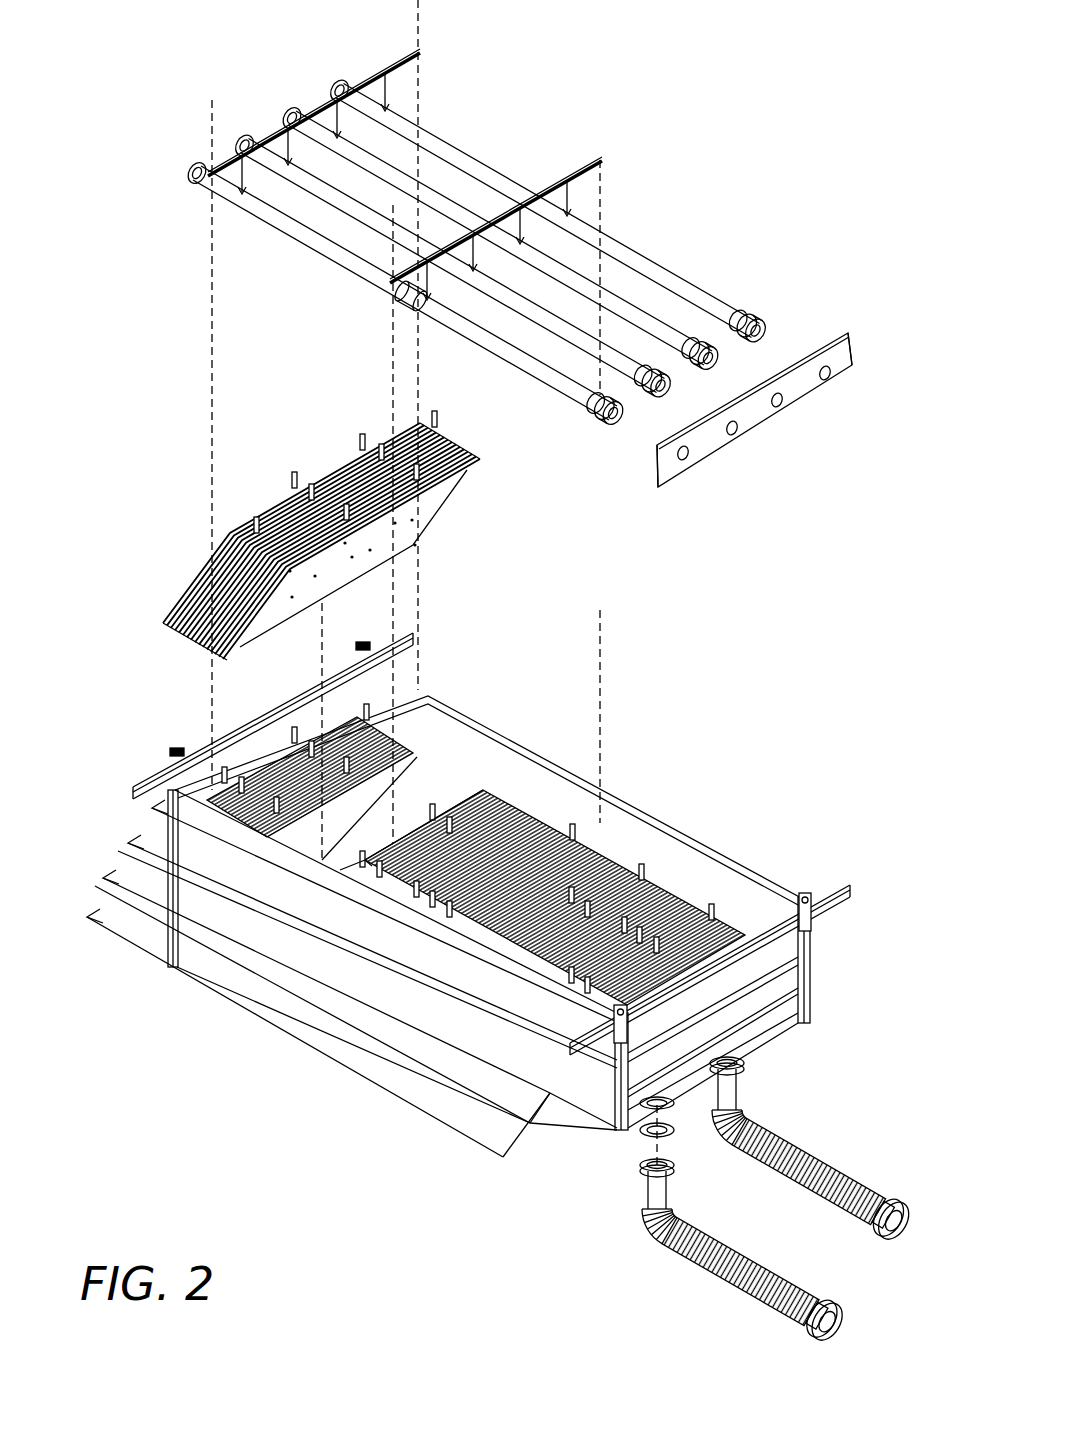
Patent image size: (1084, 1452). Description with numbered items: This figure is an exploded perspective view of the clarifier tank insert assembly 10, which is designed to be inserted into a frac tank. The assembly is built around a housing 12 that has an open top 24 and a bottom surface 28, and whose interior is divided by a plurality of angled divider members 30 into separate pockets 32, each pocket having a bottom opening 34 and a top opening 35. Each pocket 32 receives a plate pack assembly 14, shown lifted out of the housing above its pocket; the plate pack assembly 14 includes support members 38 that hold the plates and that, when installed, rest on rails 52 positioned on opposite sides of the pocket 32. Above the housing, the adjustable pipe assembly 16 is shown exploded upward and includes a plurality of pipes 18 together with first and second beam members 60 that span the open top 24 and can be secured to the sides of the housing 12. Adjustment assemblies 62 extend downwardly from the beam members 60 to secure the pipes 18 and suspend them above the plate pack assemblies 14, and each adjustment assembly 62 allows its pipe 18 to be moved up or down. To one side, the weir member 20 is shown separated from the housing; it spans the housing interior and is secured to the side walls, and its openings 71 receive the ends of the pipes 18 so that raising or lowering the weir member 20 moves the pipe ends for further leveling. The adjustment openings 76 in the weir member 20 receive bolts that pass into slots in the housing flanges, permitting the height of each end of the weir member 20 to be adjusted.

The clarifier tank insert assembly 10 is at (495, 673).
The housing 12 is at (690, 868).
The plate pack assembly 14 is at (294, 600).
The adjustable pipe assembly 16 is at (785, 412).
The pipe 18 is at (427, 193).
The weir member 20 is at (785, 402).
The open top 24 is at (626, 834).
The bottom surface 28 is at (400, 1107).
The angled divider member 30 is at (416, 802).
The pocket 32 is at (462, 786).
The bottom opening 34 is at (344, 870).
The top opening 35 is at (483, 788).
The support member 38 is at (164, 628).
The rail 52 is at (366, 862).
The beam member 60 is at (316, 110).
The adjustment assembly 62 is at (408, 96).
The opening 71 is at (740, 432).
The adjustment opening 76 is at (850, 343).